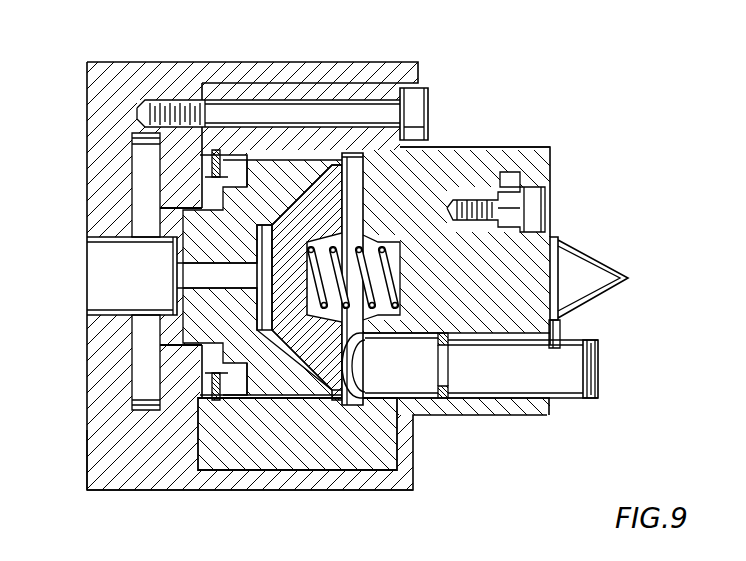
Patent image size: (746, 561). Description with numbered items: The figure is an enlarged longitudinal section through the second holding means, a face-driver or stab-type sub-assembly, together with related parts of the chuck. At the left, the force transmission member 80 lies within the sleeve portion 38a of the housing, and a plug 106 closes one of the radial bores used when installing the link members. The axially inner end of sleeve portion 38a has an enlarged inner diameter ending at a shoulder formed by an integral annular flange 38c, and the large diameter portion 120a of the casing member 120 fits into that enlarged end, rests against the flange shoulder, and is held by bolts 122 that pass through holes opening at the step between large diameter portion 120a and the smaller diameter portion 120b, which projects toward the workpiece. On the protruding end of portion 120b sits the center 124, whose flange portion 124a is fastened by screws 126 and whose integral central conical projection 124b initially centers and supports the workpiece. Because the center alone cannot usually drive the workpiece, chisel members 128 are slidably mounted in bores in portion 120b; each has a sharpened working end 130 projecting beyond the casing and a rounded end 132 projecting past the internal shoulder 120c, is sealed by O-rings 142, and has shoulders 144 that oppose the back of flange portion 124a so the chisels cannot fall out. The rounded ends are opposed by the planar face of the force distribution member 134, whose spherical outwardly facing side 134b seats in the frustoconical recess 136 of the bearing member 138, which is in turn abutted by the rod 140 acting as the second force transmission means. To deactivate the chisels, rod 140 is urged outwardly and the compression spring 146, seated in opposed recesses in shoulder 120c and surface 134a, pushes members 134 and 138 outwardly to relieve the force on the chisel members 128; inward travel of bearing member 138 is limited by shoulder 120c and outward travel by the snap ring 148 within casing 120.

The force transmission member 80 is at (93, 390).
The sleeve portion 38a is at (260, 485).
The annular flange 38c is at (85, 460).
The bearing member 138 is at (188, 232).
The rod 140 is at (105, 288).
The casing member 120 is at (390, 449).
The large diameter portion 120a is at (213, 473).
The small diameter portion 120b is at (543, 148).
The shoulder 120c is at (360, 163).
The snap ring 148 is at (200, 165).
The bolts 122 is at (386, 110).
The frustoconical recess 136 is at (275, 200).
The force distribution member 134 is at (323, 360).
The surface of force distribution member 134a is at (385, 188).
The axially outwardly facing side 134b is at (168, 393).
The plugs 106 is at (371, 11).
The center 124 is at (615, 166).
The flange portion 124a is at (507, 172).
The central conical projection 124b is at (598, 275).
The screws 126 is at (538, 209).
The shoulders 144 is at (551, 330).
The compression spring 146 is at (388, 283).
The rounded end 132 is at (357, 366).
The O-rings 142 is at (450, 398).
The chisel members 128 is at (533, 377).
The working end 130 is at (600, 378).